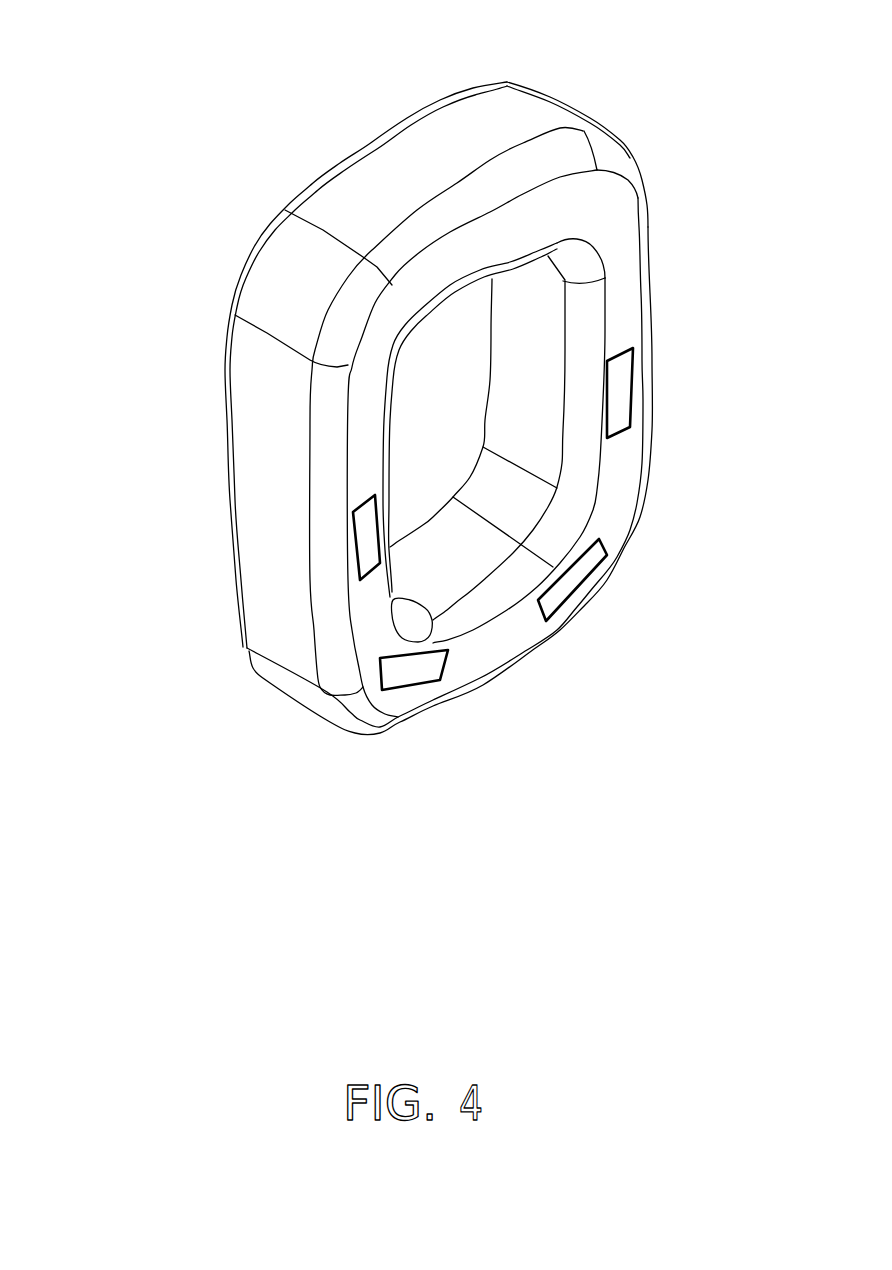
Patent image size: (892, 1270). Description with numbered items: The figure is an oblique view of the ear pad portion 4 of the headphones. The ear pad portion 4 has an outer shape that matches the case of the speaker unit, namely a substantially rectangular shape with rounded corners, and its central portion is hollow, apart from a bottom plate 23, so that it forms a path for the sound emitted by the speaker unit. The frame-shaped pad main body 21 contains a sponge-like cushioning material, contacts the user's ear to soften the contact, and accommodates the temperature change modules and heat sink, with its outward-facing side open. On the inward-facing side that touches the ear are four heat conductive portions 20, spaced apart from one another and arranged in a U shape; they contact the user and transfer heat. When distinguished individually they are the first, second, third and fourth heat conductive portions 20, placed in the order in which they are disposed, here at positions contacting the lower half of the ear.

The ear pad portion 4 is at (479, 376).
The heat conductive portion 20 is at (620, 386).
The pad main body 21 is at (630, 151).
The bottom plate 23 is at (340, 160).